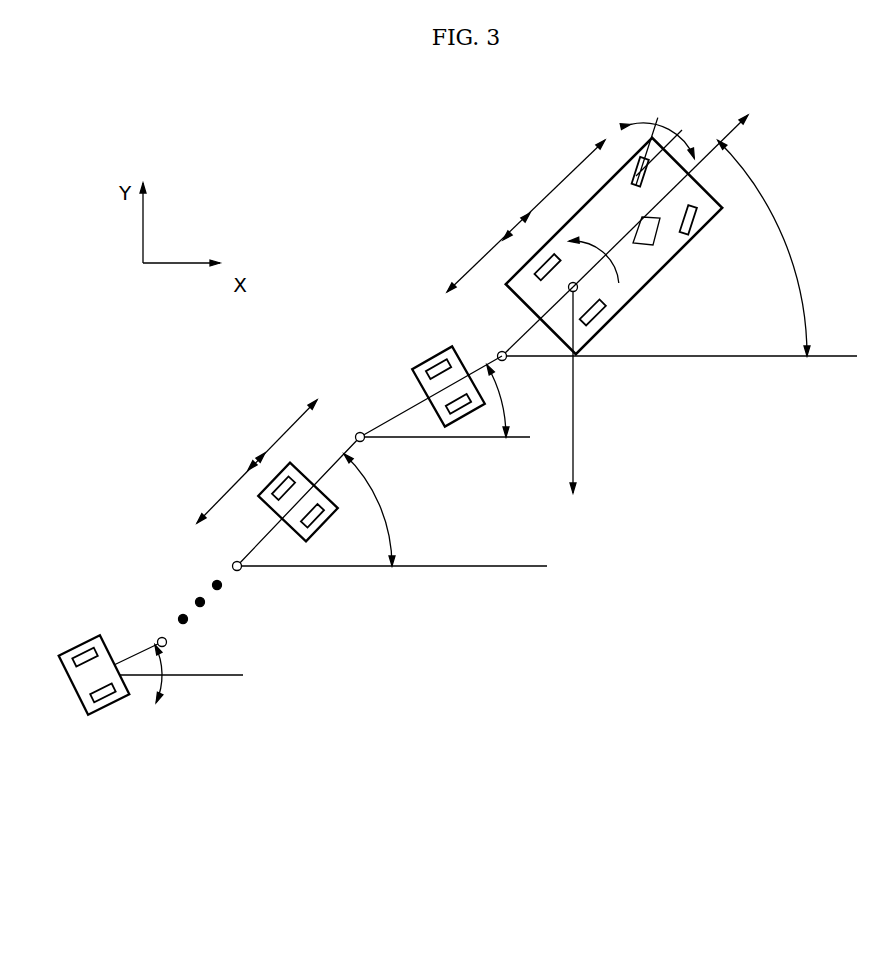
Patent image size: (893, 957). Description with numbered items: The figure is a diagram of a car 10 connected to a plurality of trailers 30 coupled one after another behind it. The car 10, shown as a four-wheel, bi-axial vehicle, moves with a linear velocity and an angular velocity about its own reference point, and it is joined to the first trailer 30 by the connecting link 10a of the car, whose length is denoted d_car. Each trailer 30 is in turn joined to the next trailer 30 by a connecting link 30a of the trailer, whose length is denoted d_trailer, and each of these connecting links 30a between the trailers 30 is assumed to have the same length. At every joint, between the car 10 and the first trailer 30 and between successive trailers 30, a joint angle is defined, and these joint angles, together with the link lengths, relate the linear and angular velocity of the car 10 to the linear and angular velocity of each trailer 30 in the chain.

The car 10 is at (648, 284).
The connecting link of the car 10a is at (518, 338).
The trailer 30 is at (430, 357).
The connecting link of the trailer 30a is at (486, 366).